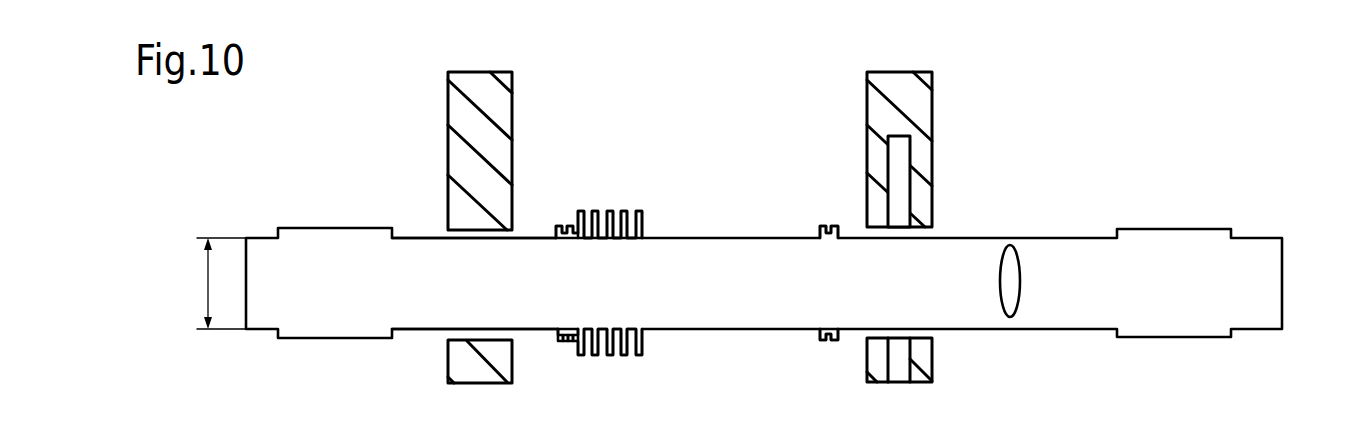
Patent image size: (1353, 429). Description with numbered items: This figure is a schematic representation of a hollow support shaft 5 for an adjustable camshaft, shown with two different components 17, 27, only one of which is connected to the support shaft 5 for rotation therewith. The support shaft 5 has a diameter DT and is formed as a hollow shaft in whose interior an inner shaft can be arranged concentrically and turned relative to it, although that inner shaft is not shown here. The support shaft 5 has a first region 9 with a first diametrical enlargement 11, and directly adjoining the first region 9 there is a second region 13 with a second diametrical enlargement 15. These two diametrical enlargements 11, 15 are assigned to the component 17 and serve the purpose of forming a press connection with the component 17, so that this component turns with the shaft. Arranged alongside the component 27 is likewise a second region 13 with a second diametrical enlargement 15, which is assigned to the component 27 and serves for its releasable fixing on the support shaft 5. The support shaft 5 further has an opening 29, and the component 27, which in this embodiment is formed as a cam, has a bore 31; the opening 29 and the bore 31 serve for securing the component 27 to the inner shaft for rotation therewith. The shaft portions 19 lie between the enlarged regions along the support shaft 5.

The support shaft 5 is at (1225, 272).
The first region 9 is at (580, 210).
The first diametrical enlargement 11 is at (622, 203).
The second region 13 is at (562, 223).
The second diametrical enlargement 15 is at (560, 335).
The component 17 is at (500, 110).
The shaft section 19 is at (460, 257).
The component 27 is at (932, 73).
The opening 29 is at (1008, 272).
The bore 31 is at (900, 160).
The diameter of the support shaft DT is at (204, 283).